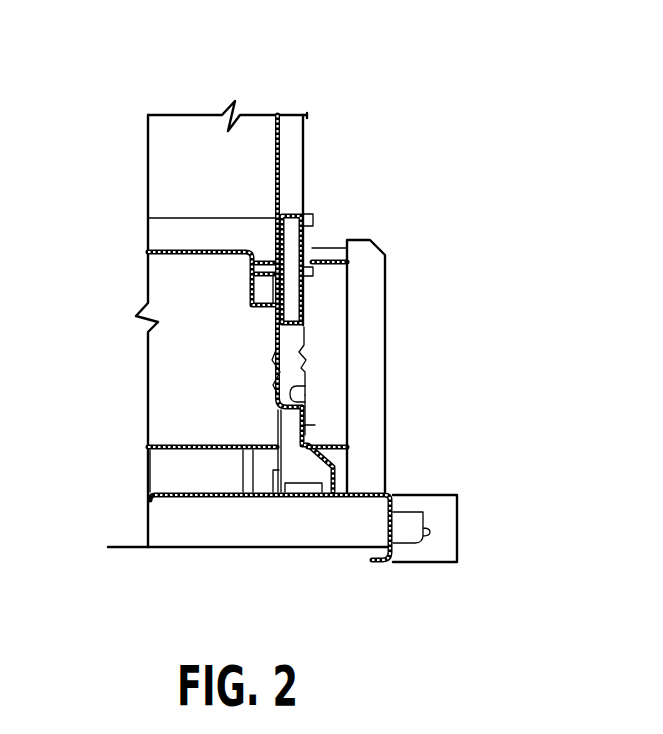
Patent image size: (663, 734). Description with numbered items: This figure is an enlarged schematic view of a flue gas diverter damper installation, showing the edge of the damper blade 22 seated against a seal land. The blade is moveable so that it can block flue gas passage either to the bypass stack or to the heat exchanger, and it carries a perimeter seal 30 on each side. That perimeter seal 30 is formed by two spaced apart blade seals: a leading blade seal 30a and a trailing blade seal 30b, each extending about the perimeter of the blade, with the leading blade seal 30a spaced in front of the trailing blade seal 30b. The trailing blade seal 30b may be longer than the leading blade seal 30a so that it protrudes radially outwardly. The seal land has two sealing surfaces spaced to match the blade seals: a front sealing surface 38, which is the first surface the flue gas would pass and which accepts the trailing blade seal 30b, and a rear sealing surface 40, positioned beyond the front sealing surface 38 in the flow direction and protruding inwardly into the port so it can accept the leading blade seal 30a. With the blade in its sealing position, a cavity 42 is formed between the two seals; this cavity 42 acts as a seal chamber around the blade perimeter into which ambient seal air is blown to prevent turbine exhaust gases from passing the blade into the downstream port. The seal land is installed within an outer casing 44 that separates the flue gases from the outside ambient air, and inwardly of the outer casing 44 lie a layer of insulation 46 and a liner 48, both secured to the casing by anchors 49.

The damper blade 22 is at (195, 143).
The perimeter seal 30 is at (308, 320).
The leading blade seal 30a is at (302, 360).
The trailing blade seal 30b is at (304, 378).
The rear sealing surface 40 is at (305, 395).
The cavity 42 is at (292, 358).
The front sealing surface 38 is at (265, 430).
The liner 48 is at (187, 444).
The insulation 46 is at (193, 472).
The anchors 49 is at (240, 477).
The outer casing 44 is at (237, 497).